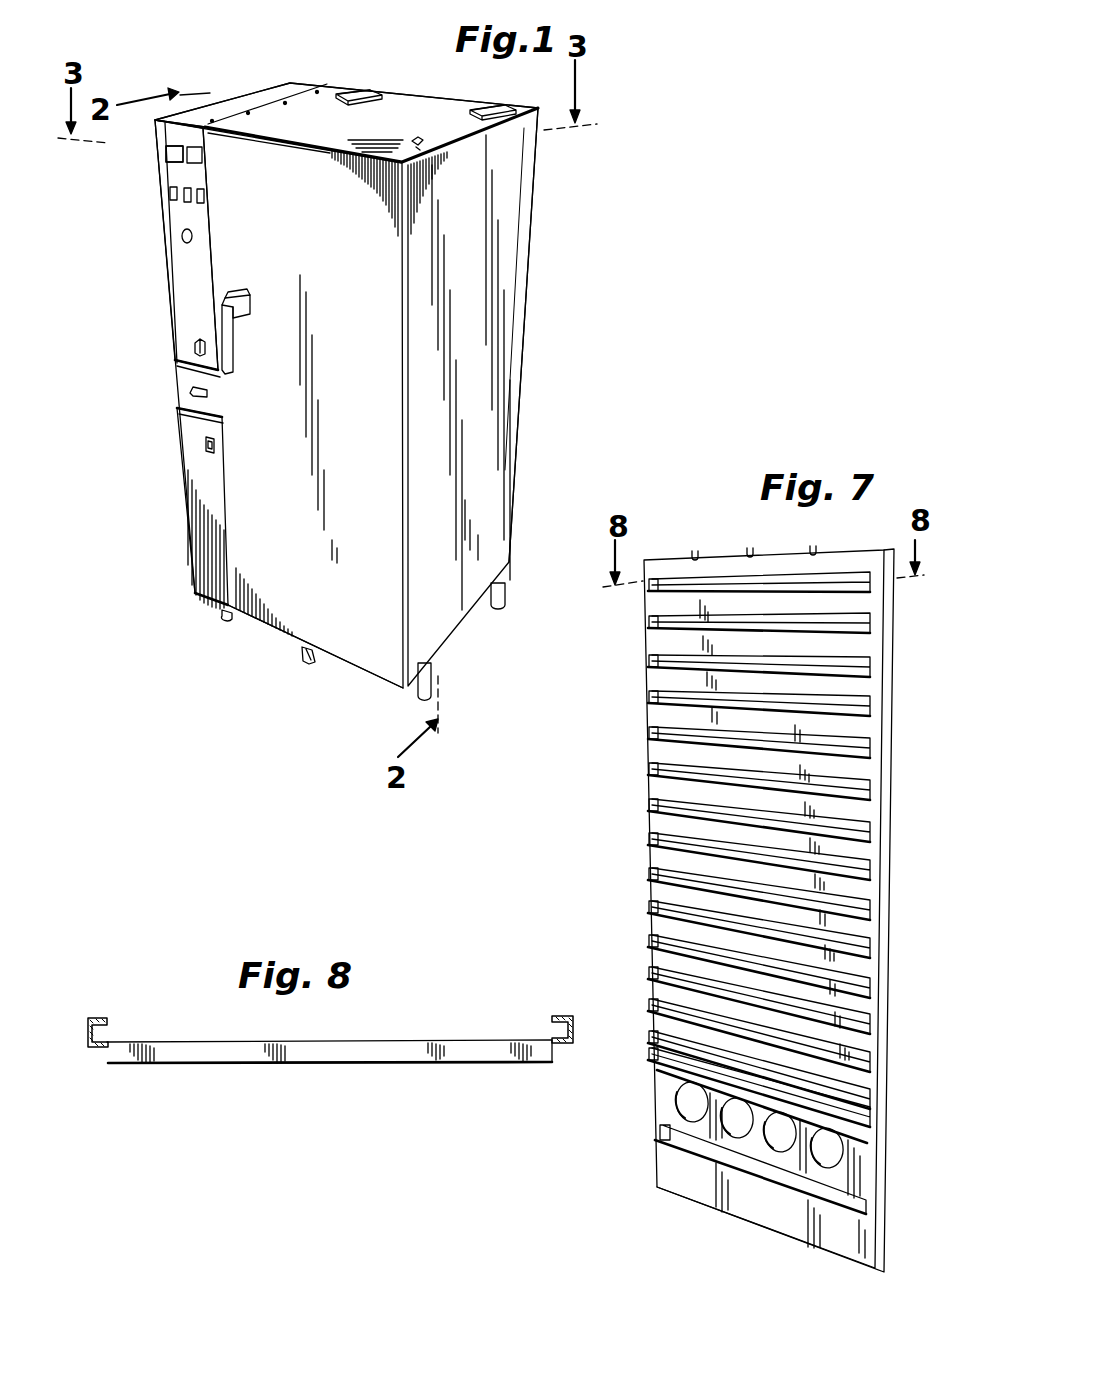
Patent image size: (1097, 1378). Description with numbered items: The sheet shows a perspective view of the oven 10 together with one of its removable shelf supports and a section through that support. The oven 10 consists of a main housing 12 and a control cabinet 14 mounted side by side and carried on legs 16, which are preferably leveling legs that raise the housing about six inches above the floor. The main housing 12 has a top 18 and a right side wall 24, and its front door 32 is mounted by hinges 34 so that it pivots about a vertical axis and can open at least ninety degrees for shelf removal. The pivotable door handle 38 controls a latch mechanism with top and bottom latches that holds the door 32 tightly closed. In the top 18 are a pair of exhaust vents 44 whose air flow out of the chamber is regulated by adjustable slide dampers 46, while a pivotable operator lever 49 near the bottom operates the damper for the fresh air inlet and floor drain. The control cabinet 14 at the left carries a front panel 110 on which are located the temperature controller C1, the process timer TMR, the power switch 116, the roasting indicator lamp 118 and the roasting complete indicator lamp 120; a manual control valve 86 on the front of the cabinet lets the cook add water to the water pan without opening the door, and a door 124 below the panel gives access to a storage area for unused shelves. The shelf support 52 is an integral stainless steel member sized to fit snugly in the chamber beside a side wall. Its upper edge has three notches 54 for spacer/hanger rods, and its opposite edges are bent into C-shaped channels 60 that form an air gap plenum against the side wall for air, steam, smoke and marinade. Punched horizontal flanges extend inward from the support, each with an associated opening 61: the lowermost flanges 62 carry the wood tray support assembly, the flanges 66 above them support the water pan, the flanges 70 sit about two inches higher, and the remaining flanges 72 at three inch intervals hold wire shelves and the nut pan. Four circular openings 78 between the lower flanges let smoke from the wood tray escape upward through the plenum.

In FIG. 1, the oven 10 is at (387, 384).
In FIG. 1, the main housing 12 is at (515, 328).
In FIG. 1, the control cabinet 14 is at (272, 88).
In FIG. 1, the legs 16 is at (220, 616).
In FIG. 1, the top 18 is at (397, 105).
In FIG. 1, the right side wall 24 is at (520, 431).
In FIG. 1, the front door 32 is at (264, 630).
In FIG. 1, the hinges 34 is at (418, 148).
In FIG. 1, the door handle 38 is at (230, 345).
In FIG. 1, the exhaust vents 44 is at (353, 84).
In FIG. 1, the adjustable slide dampers 46 is at (333, 102).
In FIG. 1, the pivotable operator lever 49 is at (308, 661).
In FIG. 1, the manual control valve 86 is at (194, 350).
In FIG. 1, the front panel 110 is at (177, 280).
In FIG. 1, the power switch 116 is at (170, 193).
In FIG. 1, the roasting indicator lamp 118 is at (187, 203).
In FIG. 1, the roasting complete indicator lamp 120 is at (205, 193).
In FIG. 1, the door 124 is at (188, 493).
In FIG. 1, the temperature controller C1 is at (166, 154).
In FIG. 1, the process timer TMR is at (204, 154).
In FIG. 8, the shelf support 52 is at (392, 1064).
In FIG. 7, the notches 54 is at (695, 551).
In FIG. 7, the C-shaped channels 60 is at (882, 1028).
In FIG. 8, the C-shaped channels 60 is at (88, 1036).
In FIG. 7, the opening 61 is at (863, 577).
In FIG. 7, the lowermost flanges 62 is at (860, 1213).
In FIG. 7, the flanges 66 is at (870, 1147).
In FIG. 7, the flanges 70 is at (862, 1112).
In FIG. 7, the flanges 72 is at (647, 592).
In FIG. 7, the circular openings 78 is at (688, 1097).